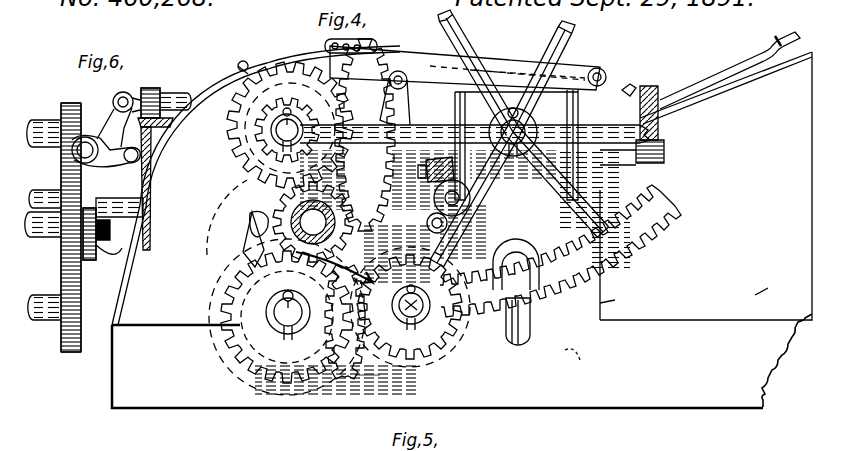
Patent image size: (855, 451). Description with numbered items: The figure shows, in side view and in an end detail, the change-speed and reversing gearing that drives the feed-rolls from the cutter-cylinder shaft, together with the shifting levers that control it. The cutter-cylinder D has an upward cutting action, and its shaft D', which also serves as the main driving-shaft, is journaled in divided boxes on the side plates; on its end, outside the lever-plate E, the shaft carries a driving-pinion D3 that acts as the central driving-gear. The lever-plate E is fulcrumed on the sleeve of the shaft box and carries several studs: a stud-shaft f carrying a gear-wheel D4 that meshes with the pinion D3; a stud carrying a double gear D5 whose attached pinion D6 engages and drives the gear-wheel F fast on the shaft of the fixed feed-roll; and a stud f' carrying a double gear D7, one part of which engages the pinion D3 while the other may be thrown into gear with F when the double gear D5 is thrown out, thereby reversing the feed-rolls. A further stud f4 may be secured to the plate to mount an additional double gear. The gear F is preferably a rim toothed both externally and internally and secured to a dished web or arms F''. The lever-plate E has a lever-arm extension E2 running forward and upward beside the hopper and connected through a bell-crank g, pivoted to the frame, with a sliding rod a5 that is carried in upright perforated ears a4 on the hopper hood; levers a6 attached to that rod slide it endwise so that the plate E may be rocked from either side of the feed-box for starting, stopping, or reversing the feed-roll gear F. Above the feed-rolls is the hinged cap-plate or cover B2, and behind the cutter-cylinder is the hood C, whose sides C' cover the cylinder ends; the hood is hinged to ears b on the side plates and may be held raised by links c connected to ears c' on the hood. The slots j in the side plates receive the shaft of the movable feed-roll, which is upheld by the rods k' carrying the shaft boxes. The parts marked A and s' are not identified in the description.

In FIG. 6, the lever-plate E is at (62, 279).
In FIG. 4, the lever-plate E is at (437, 192).
In FIG. 6, the stud f' is at (44, 123).
In FIG. 6, the stud f4 is at (43, 191).
In FIG. 6, the cutter-cylinder shaft D' is at (42, 238).
In FIG. 6, the stud-shaft f is at (44, 321).
In FIG. 6, the lever-arm extension E2 is at (88, 183).
In FIG. 4, the lever-arm extension E2 is at (666, 148).
In FIG. 6, the bell-crank g is at (92, 126).
In FIG. 6, the upright perforated ears a4 is at (156, 84).
In FIG. 6, the transversely-arranged rod a5 is at (176, 91).
In FIG. 4, the transversely-arranged rod a5 is at (760, 74).
In FIG. 4, the levers a6 is at (722, 66).
In FIG. 6, the post A is at (152, 165).
In FIG. 4, the hood C is at (256, 185).
In FIG. 4, the hood sides C' is at (225, 217).
In FIG. 4, the ears c' is at (241, 59).
In FIG. 4, the links c is at (501, 69).
In FIG. 4, the double gear D7 is at (232, 150).
In FIG. 4, the gear-wheel D4 is at (250, 215).
In FIG. 4, the driving-pinion D3 is at (250, 250).
In FIG. 4, the cutter-cylinder D is at (282, 317).
In FIG. 4, the gear-wheel D5 is at (445, 325).
In FIG. 4, the pinion D6 is at (392, 335).
In FIG. 4, the gear-wheel F is at (560, 251).
In FIG. 4, the dished web or arms F'' is at (520, 138).
In FIG. 4, the ears b is at (398, 71).
In FIG. 4, the cap-plate or cover B2 is at (437, 83).
In FIG. 4, the slots j is at (530, 330).
In FIG. 4, the rods k' is at (530, 329).
In FIG. 4, the bracket s' is at (628, 84).